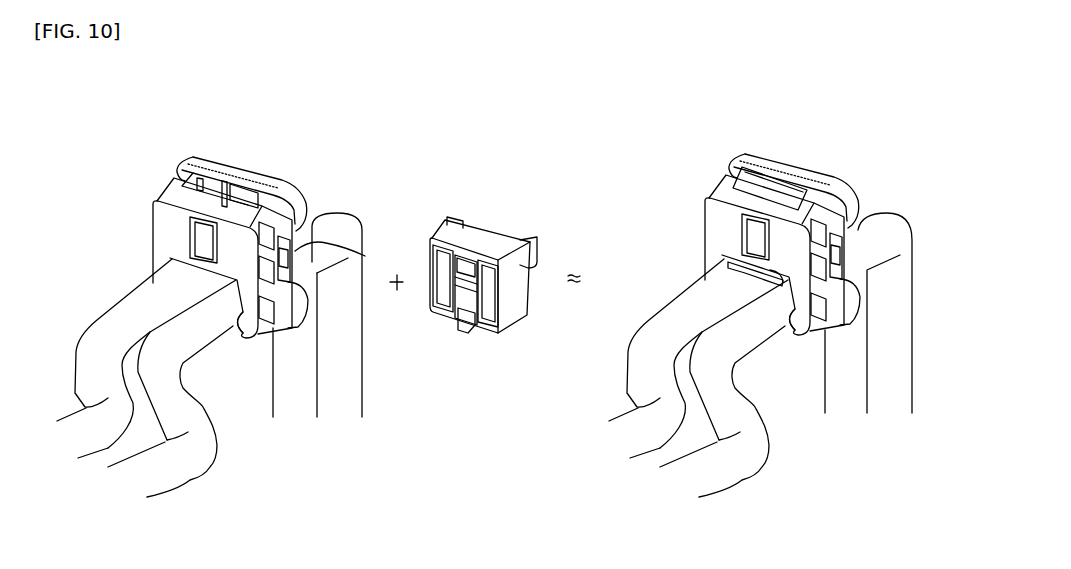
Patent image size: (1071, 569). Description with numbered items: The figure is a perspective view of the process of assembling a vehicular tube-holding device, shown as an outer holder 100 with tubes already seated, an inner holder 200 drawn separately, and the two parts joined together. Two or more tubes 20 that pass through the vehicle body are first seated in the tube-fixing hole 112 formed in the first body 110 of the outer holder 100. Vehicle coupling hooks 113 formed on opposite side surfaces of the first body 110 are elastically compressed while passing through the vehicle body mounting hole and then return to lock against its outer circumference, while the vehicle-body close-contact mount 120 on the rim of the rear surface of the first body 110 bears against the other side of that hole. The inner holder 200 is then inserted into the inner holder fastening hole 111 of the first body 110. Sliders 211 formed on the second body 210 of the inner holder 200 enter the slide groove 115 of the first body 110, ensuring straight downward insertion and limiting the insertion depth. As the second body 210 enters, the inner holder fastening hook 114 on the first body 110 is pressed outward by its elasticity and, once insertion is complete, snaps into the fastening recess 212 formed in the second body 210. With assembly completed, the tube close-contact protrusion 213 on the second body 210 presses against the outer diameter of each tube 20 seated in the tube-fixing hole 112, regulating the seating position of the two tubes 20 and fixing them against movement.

The outer holder 100 is at (254, 157).
The first body 110 is at (152, 233).
The inner holder fastening hole 111 is at (212, 187).
The tube-fixing hole 112 is at (232, 325).
The vehicle coupling hooks 113 is at (317, 270).
The inner holder fastening hook 114 is at (190, 220).
The slide groove 115 is at (277, 193).
The vehicle-body close-contact mount 120 is at (310, 210).
The tubes 20 is at (110, 328).
The inner holder 200 is at (498, 215).
The second body 210 is at (507, 330).
The sliders 211 is at (528, 245).
The fastening recess 212 is at (463, 263).
The tube close-contact protrusion 213 is at (468, 332).